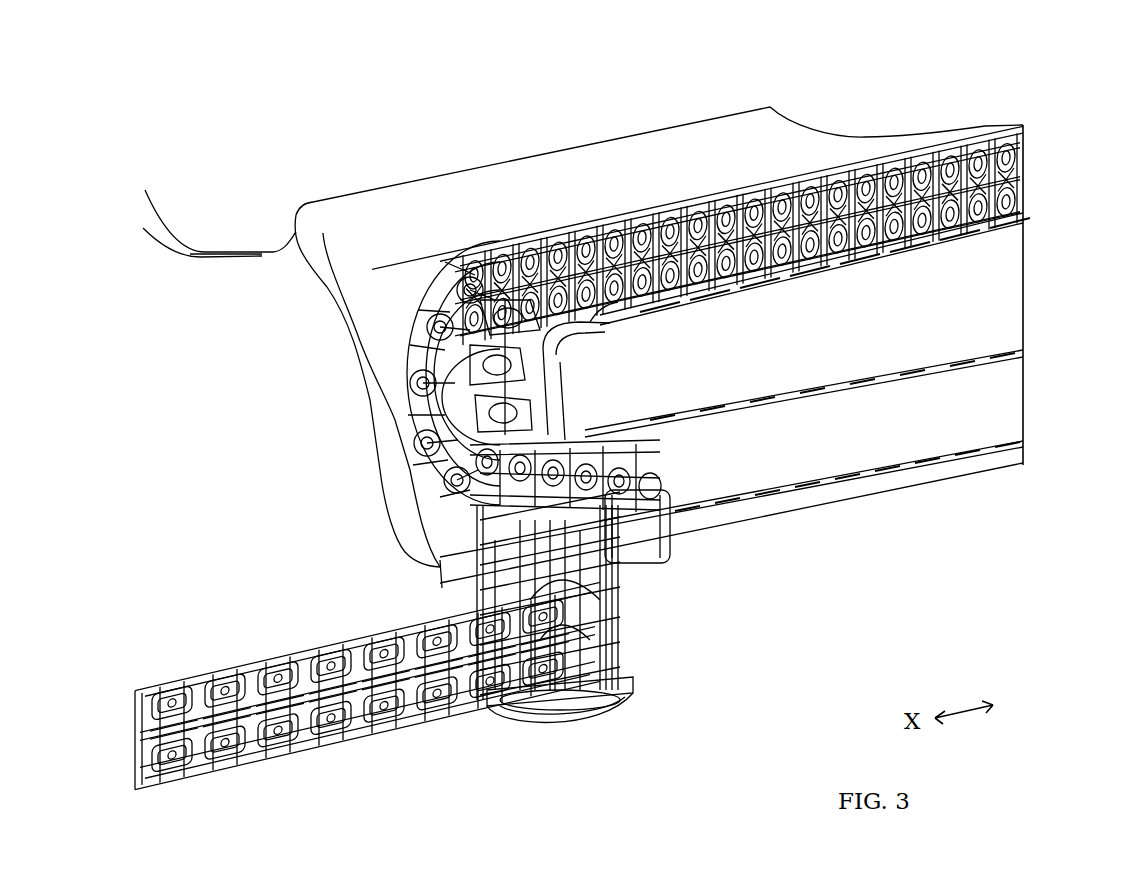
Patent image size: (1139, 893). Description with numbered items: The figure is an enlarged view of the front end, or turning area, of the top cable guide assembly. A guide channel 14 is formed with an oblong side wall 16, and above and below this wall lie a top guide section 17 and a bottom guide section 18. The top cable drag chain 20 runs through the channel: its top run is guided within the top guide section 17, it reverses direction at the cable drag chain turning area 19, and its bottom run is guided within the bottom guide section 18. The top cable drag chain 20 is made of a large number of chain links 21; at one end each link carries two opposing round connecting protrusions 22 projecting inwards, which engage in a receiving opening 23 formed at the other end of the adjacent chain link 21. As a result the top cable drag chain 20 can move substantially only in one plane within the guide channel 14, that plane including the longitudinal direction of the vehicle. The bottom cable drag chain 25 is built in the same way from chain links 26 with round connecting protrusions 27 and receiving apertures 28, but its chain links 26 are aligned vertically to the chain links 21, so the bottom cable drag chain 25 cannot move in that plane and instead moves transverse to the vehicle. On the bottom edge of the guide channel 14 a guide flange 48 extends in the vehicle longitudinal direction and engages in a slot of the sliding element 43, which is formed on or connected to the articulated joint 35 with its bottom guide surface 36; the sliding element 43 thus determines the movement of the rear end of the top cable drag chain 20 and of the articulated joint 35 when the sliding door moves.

The guide channel 14 is at (713, 140).
The oblong side wall 16 is at (990, 313).
The top guide section 17 is at (968, 140).
The bottom guide section 18 is at (1007, 416).
The cable drag chain turning area 19 is at (390, 296).
The top cable drag chain 20 is at (1020, 163).
The chain link of top cable drag chain 21 is at (412, 378).
The round connecting protrusion 22 is at (415, 430).
The receiving opening for connecting protrusion 23 is at (490, 387).
The bottom cable drag chain 25 is at (147, 740).
The chain link of bottom cable drag chain 26 is at (142, 690).
The round connecting protrusion 27 is at (223, 670).
The receiving aperture for connecting protrusion 28 is at (283, 758).
The articulated joint 35 is at (622, 623).
The bottom guide surface 36 is at (622, 705).
The sliding element 43 is at (668, 538).
The guide flange 48 is at (870, 492).